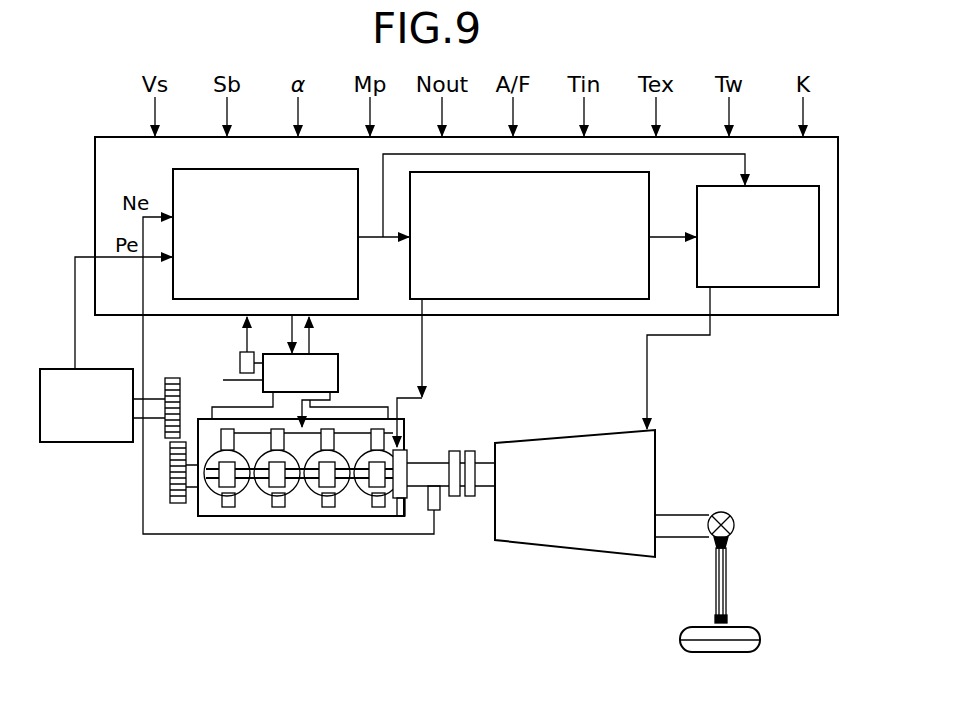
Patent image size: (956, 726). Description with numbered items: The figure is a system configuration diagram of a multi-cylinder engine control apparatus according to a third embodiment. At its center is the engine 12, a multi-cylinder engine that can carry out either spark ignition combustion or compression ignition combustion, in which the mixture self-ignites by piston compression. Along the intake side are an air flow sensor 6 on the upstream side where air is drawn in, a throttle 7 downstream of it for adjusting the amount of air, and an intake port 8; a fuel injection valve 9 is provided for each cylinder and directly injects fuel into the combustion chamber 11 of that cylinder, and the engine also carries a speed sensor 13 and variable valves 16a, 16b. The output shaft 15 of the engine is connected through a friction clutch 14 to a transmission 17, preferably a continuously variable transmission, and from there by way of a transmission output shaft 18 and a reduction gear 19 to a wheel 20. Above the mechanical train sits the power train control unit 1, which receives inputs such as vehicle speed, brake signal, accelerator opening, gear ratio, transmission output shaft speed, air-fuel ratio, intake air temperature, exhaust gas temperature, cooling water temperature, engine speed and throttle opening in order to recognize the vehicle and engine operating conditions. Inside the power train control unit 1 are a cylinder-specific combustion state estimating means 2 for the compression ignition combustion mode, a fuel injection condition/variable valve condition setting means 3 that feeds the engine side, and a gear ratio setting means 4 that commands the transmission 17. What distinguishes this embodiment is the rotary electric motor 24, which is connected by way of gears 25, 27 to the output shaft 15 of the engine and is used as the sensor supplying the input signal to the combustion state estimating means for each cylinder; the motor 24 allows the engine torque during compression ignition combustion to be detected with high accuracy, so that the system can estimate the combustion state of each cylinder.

The power train control unit 1 is at (120, 137).
The cylinder-specific combustion state estimating means 2 is at (173, 178).
The fuel injection condition/variable valve condition setting means 3 is at (649, 188).
The gear ratio setting means 4 is at (772, 186).
The air flow sensor 6 is at (240, 363).
The throttle 7 is at (338, 362).
The intake port 8 is at (358, 407).
The fuel injection valve 9 is at (224, 429).
The combustion chamber 11 is at (226, 507).
The engine 12 is at (337, 517).
The speed sensor 13 is at (436, 512).
The friction clutch 14 is at (470, 498).
The output shaft 15 is at (420, 466).
The variable valve 16a is at (407, 455).
The variable valve 16b is at (400, 505).
The transmission 17 is at (557, 437).
The transmission output shaft 18 is at (680, 538).
The reduction gear 19 is at (724, 512).
The wheel 20 is at (752, 627).
The rotary electric motor 24 is at (60, 369).
The gear 25 is at (170, 474).
The gear 27 is at (172, 378).